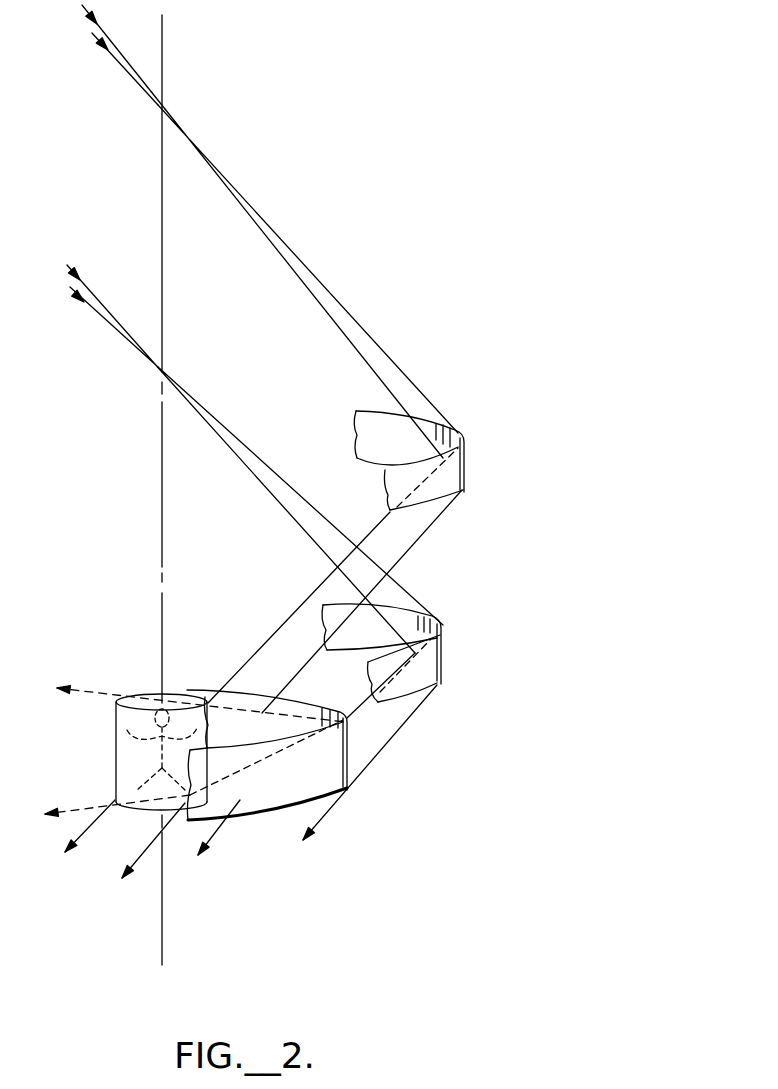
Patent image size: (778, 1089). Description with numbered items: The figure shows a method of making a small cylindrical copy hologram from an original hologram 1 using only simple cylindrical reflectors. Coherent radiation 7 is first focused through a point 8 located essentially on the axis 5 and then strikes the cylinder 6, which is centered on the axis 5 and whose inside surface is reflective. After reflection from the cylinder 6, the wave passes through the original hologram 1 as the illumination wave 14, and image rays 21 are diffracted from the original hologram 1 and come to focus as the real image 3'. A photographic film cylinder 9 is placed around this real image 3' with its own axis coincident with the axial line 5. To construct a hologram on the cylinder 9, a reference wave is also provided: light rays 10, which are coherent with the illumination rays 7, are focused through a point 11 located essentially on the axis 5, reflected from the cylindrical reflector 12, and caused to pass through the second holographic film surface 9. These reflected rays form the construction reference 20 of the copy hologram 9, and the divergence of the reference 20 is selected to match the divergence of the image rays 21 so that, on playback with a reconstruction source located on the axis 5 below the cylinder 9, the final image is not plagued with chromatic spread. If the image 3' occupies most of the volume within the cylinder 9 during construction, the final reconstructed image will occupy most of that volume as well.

The original hologram 1 is at (283, 806).
The image 3' is at (134, 756).
The axis 5 is at (163, 596).
The cylinder 6 is at (445, 648).
The coherent radiation 7 is at (400, 591).
The point 8 is at (163, 371).
The photographic film cylinder 9 is at (170, 697).
The light rays 10 is at (370, 333).
The point 11 is at (165, 106).
The cylindrical reflector 12 is at (468, 452).
The illumination wave 14 is at (383, 738).
The construction reference 20 is at (415, 530).
The image rays 21 is at (103, 692).